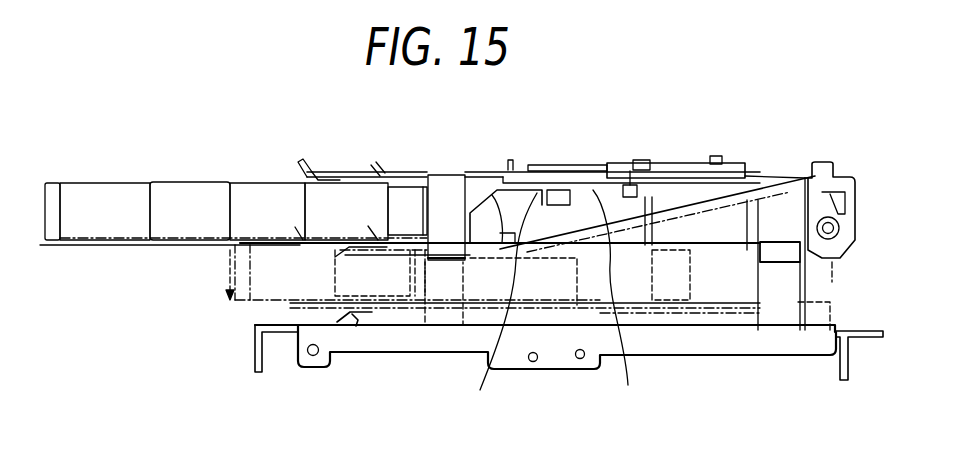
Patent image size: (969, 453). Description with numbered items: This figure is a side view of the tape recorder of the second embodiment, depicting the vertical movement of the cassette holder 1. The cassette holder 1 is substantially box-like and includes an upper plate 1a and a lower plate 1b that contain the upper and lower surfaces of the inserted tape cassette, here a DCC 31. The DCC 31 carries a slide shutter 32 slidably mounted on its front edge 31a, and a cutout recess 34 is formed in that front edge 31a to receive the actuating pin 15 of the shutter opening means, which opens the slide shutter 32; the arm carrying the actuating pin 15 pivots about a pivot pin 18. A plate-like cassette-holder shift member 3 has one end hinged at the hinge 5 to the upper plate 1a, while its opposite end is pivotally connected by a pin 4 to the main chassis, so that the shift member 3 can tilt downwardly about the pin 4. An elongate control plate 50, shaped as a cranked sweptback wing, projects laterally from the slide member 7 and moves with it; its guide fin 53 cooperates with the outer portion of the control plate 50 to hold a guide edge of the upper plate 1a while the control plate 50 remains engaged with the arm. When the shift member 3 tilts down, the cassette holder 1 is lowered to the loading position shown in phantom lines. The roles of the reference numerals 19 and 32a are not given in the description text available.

The DCC 31 is at (107, 182).
The slide shutter 32 is at (192, 182).
The cassette holder 1 is at (306, 162).
The upper plate 1a is at (332, 172).
The lower plate 1b is at (413, 326).
The hinge 5 is at (462, 180).
The cutout recess 34 is at (556, 190).
The control plate 50 is at (572, 165).
The actuating pin 15 is at (628, 185).
The slide member 7 is at (641, 160).
The front edge 31a is at (648, 196).
The guide plate 19 is at (690, 163).
The pivot pin 18 is at (716, 156).
The cassette-holder shift member 3 is at (852, 176).
The pin 4 is at (840, 228).
The shaft 32a is at (498, 307).
The guide fin 53 is at (617, 301).